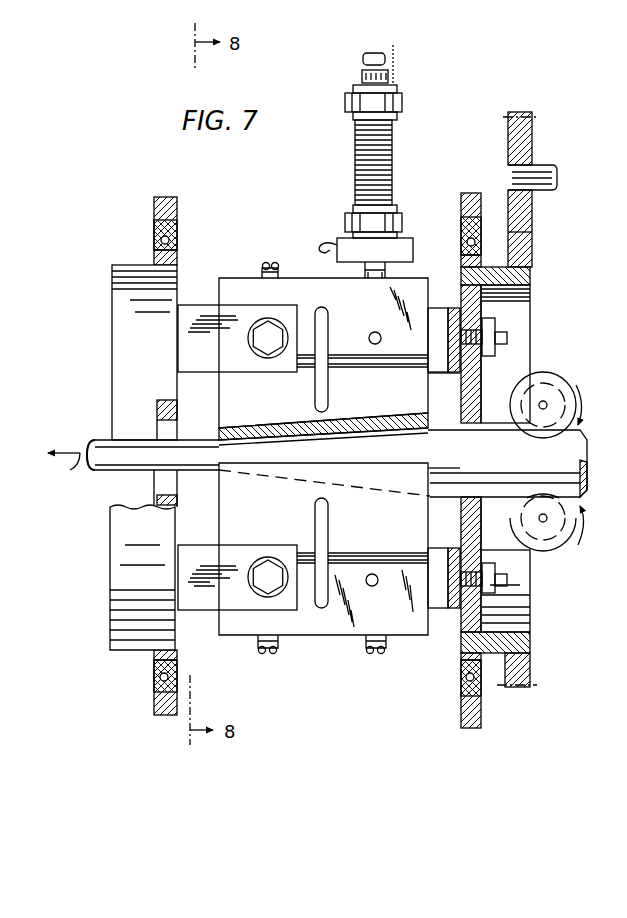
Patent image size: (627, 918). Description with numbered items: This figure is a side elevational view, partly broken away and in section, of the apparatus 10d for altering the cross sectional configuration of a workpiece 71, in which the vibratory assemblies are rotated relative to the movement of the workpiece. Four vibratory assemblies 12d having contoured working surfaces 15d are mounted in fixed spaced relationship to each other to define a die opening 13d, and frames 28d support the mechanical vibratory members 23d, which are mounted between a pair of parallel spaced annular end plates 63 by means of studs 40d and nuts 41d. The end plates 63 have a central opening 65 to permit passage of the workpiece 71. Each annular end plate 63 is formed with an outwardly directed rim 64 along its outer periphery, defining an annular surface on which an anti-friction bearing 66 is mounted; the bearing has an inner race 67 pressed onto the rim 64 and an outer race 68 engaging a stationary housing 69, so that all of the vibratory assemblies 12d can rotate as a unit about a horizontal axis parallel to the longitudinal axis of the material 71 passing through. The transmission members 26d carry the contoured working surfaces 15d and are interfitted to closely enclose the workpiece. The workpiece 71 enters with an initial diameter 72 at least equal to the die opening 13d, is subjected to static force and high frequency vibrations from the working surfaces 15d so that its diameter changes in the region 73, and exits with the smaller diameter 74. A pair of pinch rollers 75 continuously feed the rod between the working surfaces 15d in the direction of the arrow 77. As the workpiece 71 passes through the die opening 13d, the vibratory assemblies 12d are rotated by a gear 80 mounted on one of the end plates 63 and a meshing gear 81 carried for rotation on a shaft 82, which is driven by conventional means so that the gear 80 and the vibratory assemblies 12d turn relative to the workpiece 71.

The apparatus 10d is at (249, 201).
The vibratory assembly 12d is at (399, 178).
The die opening 13d is at (414, 443).
The contoured working surface 15d is at (362, 433).
The mechanical vibratory member 23d is at (296, 274).
The transmission member 26d is at (238, 278).
The frame 28d is at (197, 306).
The stud 40d is at (512, 347).
The nut 41d is at (497, 322).
The annular end plate 63 is at (128, 366).
The rim 64 is at (531, 276).
The central opening 65 is at (158, 416).
The anti-friction bearing 66 is at (462, 241).
The inner race 67 is at (461, 257).
The outer race 68 is at (461, 223).
The stationary housing 69 is at (160, 198).
The workpiece 71 is at (490, 500).
The initial diameter 72 is at (585, 432).
The region 73 is at (300, 455).
The diameter 74 is at (99, 475).
The pinch roller 75 is at (562, 383).
The arrow 77 is at (53, 473).
The gear 80 is at (533, 255).
The meshing gear 81 is at (533, 157).
The shaft 82 is at (551, 190).